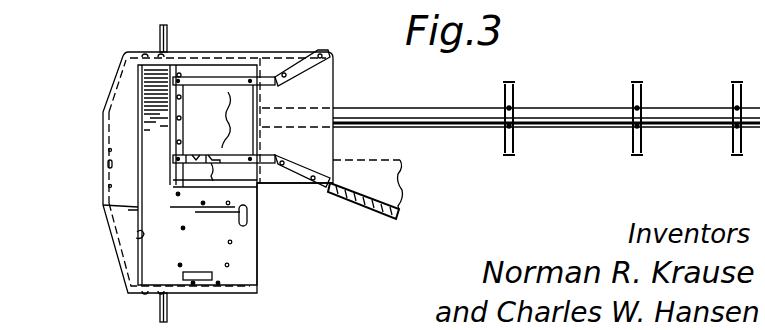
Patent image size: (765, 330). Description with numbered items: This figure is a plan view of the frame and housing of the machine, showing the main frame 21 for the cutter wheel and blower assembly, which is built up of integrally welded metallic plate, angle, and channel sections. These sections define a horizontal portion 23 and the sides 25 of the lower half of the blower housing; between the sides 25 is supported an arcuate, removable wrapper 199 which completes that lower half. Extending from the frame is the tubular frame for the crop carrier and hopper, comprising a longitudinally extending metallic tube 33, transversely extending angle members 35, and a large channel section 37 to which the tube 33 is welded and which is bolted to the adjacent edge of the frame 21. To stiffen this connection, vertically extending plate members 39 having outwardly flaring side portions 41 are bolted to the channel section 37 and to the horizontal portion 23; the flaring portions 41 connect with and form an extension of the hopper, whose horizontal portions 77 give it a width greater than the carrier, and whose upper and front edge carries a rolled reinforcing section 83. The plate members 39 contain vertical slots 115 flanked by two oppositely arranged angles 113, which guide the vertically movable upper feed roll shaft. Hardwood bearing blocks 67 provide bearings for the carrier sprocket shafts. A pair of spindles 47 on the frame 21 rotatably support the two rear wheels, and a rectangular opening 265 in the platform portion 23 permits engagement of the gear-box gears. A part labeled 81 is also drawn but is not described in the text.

The main frame 21 is at (108, 103).
The horizontal portion 23 is at (233, 253).
The sides 25 is at (138, 237).
The tube 33 is at (455, 110).
The angle members 35 is at (514, 97).
The channel section 37 is at (318, 99).
The plate members 39 is at (206, 79).
The outwardly flaring side portions 41 is at (312, 66).
The spindles 47 is at (168, 40).
The bearing blocks 67 is at (221, 131).
The horizontal portions 77 is at (396, 188).
The plate 81 is at (316, 160).
The rolled reinforcing section 83 is at (359, 209).
The angles 113 is at (221, 174).
The vertical slots 115 is at (203, 160).
The wrapper 199 is at (146, 178).
The rectangular opening 265 is at (212, 278).